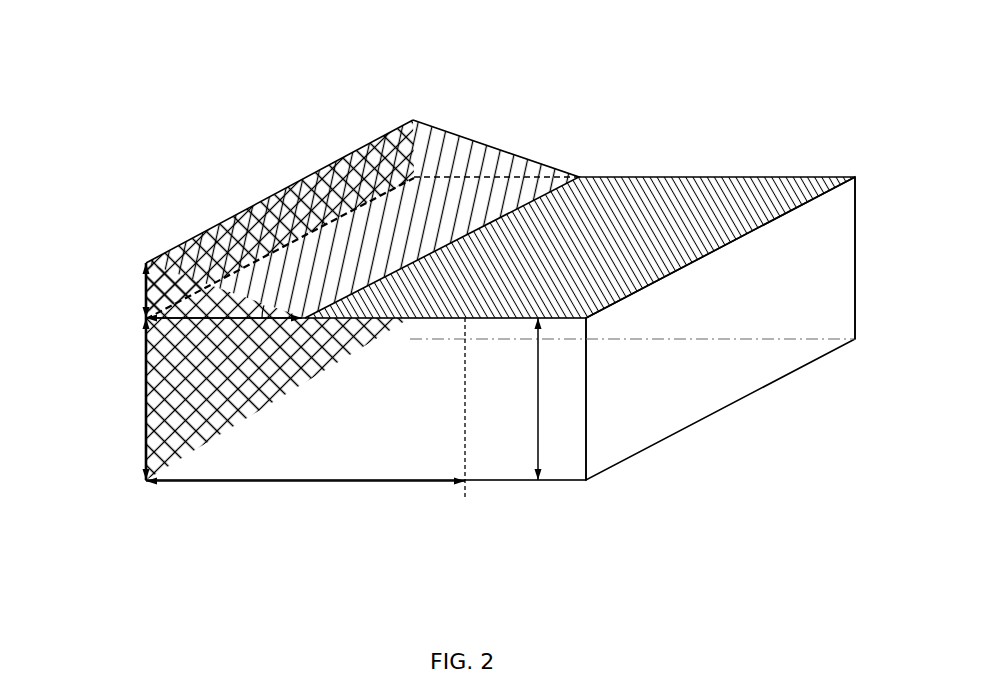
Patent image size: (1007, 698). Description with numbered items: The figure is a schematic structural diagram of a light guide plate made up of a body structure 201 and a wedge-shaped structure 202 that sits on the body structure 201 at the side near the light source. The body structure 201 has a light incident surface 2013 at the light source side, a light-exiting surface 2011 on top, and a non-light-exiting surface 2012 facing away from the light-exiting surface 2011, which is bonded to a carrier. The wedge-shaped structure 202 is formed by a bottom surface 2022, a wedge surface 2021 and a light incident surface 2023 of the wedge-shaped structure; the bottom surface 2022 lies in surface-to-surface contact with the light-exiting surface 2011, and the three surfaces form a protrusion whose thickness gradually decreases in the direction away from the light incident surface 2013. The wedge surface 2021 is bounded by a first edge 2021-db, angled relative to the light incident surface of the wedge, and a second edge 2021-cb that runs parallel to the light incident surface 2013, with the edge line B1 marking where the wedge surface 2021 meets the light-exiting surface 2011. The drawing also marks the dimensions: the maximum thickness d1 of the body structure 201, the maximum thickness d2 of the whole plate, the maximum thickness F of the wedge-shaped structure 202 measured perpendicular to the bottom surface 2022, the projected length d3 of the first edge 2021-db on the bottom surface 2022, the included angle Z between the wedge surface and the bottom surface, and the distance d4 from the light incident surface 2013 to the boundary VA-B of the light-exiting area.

The body structure 201 is at (585, 516).
The light-exiting surface of the body structure 2011 is at (793, 188).
The non-light-exiting surface 2012 is at (752, 343).
The light incident surface of the body structure 2013 is at (165, 388).
The wedge-shaped structure 202 is at (100, 102).
The wedge surface 2021 is at (468, 140).
The second edge 2021-cb is at (300, 180).
The first edge 2021-db is at (440, 130).
The bottom surface 2022 is at (250, 257).
The light incident surface of the wedge-shaped structure 2023 is at (163, 285).
The back edge boundary line B1 is at (635, 178).
The maximum thickness of the wedge-shaped structure F is at (140, 263).
The maximum thickness of the body structure d1 is at (530, 399).
The maximum thickness of the light guide plate d2 is at (135, 399).
The length of the orthographic projection of the first edge d3 is at (224, 329).
The distance between the light incident surface and the boundary of the light-exitin d4 is at (305, 471).
The included angle between the wedge surface and the bottom surface Z is at (255, 309).
The boundary of the light-exiting area VA-B is at (459, 420).